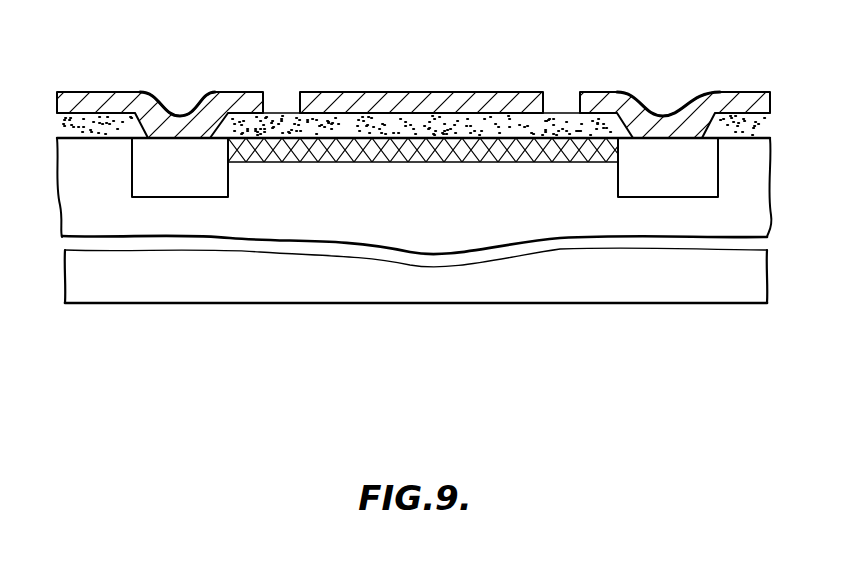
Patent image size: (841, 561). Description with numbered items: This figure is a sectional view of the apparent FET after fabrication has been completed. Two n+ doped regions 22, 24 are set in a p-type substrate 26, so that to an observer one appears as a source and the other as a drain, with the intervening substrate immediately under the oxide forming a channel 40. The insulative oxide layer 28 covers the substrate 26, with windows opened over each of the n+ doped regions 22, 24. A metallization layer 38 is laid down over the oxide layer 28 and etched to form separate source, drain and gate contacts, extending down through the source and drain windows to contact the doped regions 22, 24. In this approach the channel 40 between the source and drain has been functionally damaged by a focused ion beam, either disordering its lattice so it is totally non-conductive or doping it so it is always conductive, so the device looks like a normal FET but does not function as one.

The n+ doped region 22 is at (170, 197).
The n+ doped region 24 is at (657, 197).
The p-type substrate 26 is at (398, 232).
The insulative oxide layer 28 is at (284, 113).
The metallization layer 38 is at (180, 113).
The channel 40 is at (448, 171).